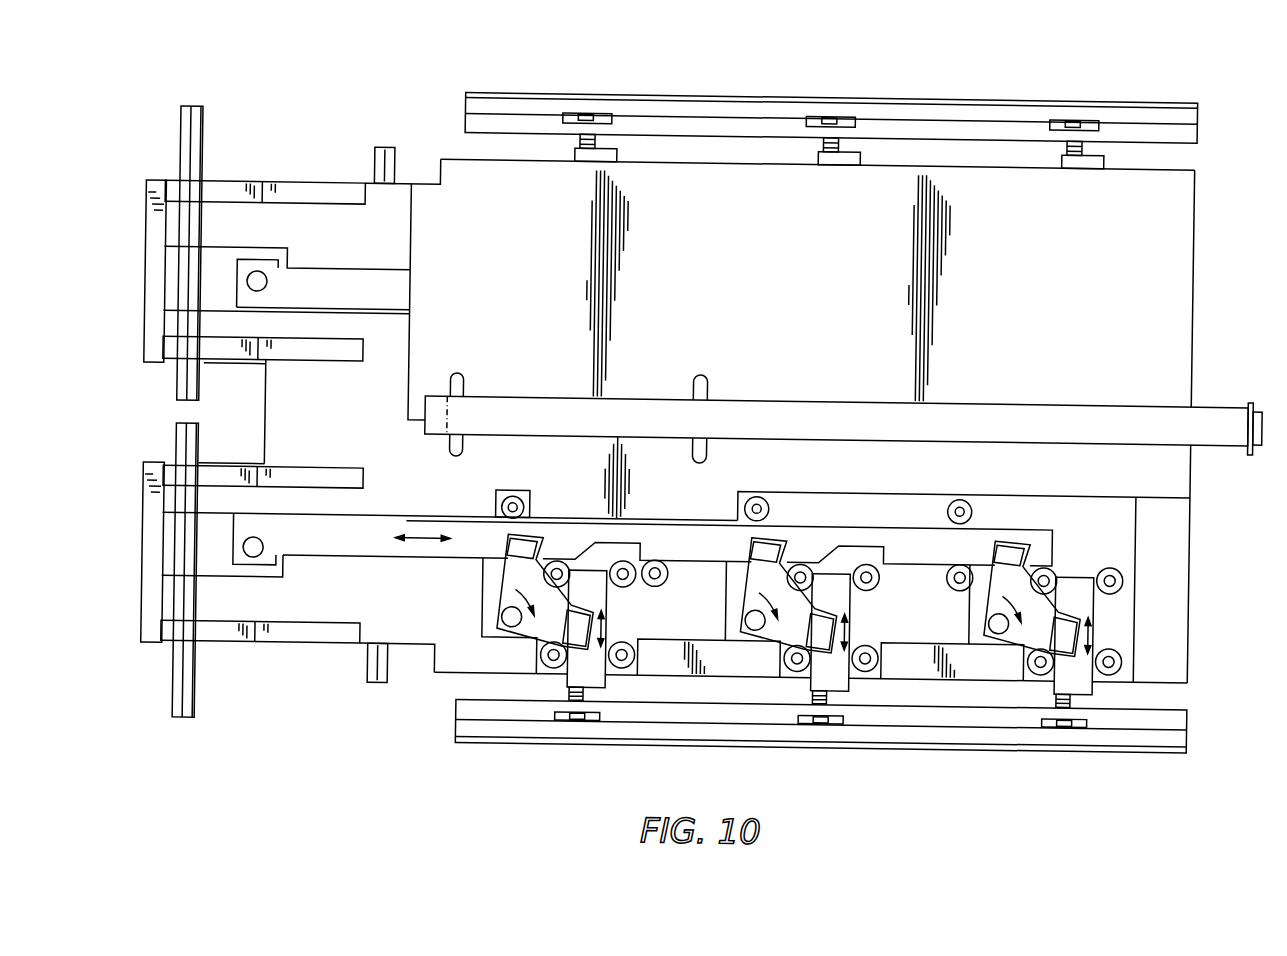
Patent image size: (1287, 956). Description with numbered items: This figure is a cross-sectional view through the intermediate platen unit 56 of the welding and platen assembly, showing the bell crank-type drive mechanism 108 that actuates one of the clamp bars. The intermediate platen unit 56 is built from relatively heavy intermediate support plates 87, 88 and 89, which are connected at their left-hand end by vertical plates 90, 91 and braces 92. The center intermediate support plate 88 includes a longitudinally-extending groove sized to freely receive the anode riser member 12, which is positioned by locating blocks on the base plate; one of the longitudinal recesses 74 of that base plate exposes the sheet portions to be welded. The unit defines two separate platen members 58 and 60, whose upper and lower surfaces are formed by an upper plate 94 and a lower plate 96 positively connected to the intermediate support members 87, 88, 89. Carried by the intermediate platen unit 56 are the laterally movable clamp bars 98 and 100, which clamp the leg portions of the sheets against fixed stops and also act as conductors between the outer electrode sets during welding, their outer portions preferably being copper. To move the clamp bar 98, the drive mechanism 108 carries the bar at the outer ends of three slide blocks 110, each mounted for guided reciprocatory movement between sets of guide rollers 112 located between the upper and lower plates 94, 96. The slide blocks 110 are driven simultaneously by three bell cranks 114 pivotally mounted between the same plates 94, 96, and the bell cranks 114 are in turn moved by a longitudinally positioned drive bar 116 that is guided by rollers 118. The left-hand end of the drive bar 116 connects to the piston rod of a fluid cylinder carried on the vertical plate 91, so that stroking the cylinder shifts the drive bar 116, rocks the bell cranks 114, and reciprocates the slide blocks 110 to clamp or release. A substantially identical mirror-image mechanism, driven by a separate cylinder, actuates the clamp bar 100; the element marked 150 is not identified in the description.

The anode riser member 12 is at (1219, 413).
The intermediate platen unit 56 is at (1195, 664).
The platen member 58 is at (1199, 323).
The platen member 60 is at (1199, 576).
The recess 74 is at (687, 425).
The intermediate support plate 87 is at (306, 621).
The intermediate support plate 88 is at (278, 436).
The intermediate support plate 89 is at (377, 205).
The vertical plate 90 is at (151, 290).
The vertical plate 91 is at (152, 565).
The braces 92 is at (242, 197).
The upper plate 94 is at (1183, 241).
The lower plate 96 is at (681, 625).
The clamp bar 98 is at (1197, 726).
The clamp bar 100 is at (732, 97).
The bell crank-type drive mechanism 108 is at (461, 683).
The slide blocks 110 is at (611, 621).
The guide rollers 112 is at (576, 579).
The bell cranks 114 is at (506, 606).
The drive bar 116 is at (385, 555).
The rollers 118 is at (529, 510).
The vertical post 150 is at (190, 167).